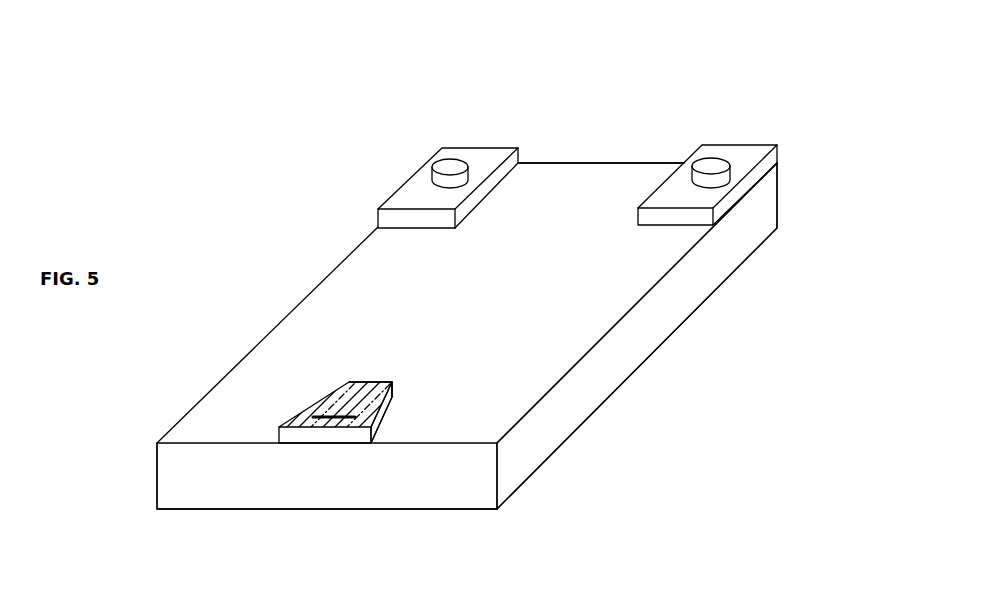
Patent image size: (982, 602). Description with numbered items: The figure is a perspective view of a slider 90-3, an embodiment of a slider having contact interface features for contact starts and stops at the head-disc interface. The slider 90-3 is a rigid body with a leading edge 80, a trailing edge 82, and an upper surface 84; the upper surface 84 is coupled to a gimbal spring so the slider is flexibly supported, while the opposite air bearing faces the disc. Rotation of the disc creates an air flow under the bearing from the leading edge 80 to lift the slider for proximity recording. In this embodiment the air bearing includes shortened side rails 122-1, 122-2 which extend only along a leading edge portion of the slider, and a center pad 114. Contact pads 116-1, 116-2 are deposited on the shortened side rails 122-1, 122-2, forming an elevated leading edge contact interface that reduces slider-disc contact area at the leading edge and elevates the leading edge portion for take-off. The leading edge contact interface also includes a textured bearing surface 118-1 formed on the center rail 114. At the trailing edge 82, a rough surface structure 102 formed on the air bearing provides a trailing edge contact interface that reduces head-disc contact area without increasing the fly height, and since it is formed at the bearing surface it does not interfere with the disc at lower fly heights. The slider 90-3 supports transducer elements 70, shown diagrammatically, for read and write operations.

The slider 90-3 is at (593, 143).
The leading edge 80 is at (658, 162).
The trailing edge 82 is at (368, 485).
The upper surface 84 is at (578, 426).
The shortened side rail 122-1 is at (413, 199).
The shortened side rail 122-2 is at (757, 153).
The contact pad 116-1 is at (452, 168).
The contact pad 116-2 is at (712, 160).
The textured bearing surface 118-1 is at (357, 396).
The rough surface structure 102 is at (388, 380).
The center pad 114 is at (388, 405).
The transducer elements 70 is at (322, 421).